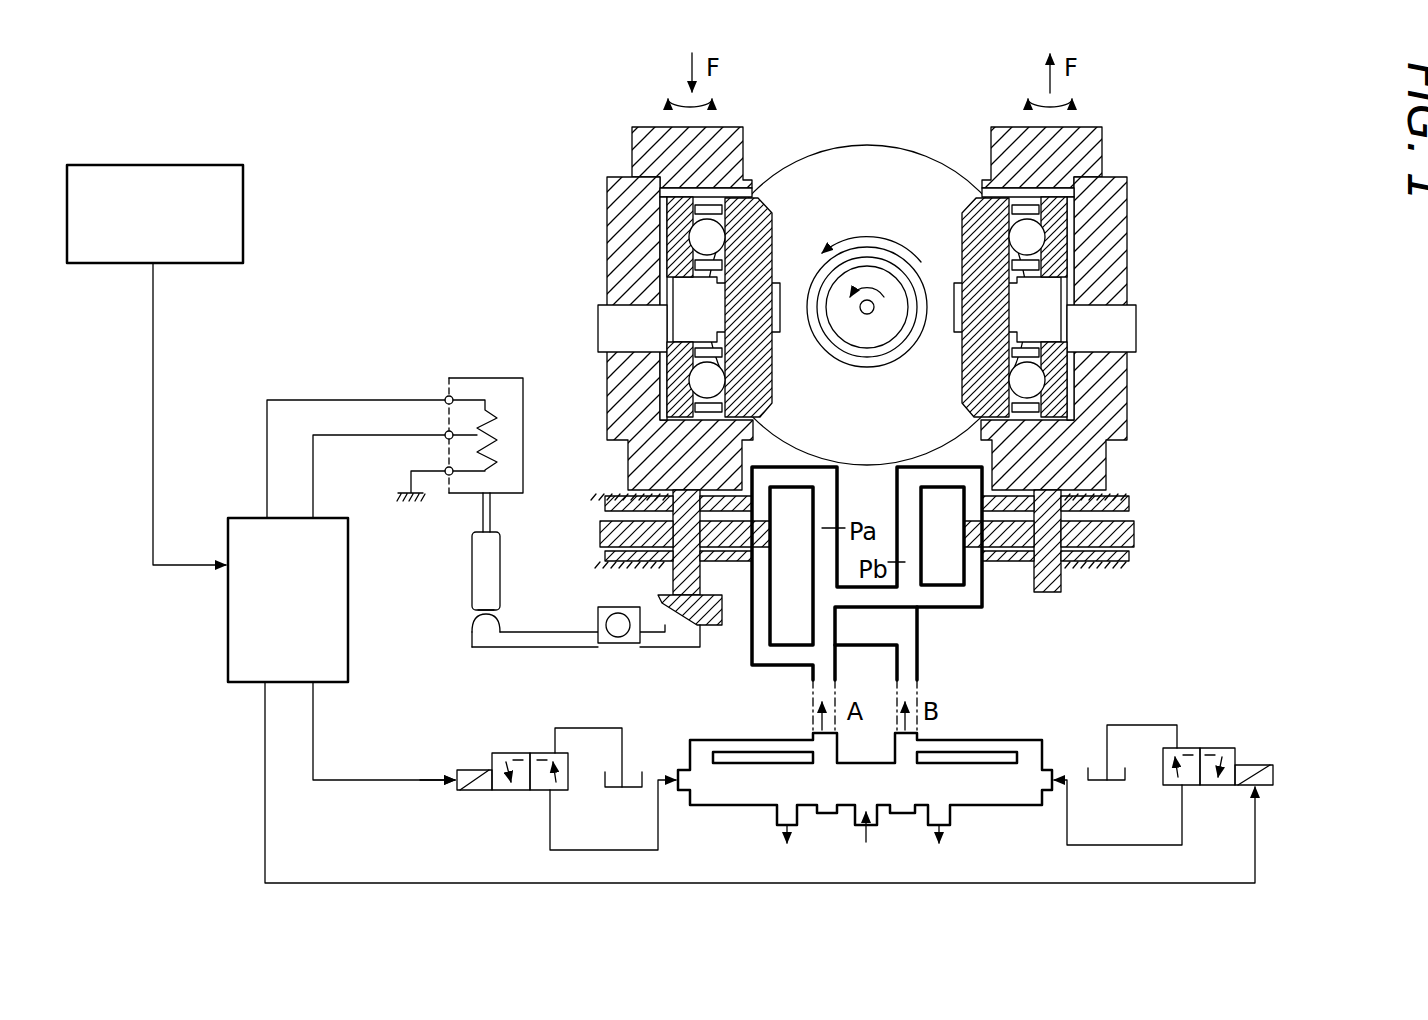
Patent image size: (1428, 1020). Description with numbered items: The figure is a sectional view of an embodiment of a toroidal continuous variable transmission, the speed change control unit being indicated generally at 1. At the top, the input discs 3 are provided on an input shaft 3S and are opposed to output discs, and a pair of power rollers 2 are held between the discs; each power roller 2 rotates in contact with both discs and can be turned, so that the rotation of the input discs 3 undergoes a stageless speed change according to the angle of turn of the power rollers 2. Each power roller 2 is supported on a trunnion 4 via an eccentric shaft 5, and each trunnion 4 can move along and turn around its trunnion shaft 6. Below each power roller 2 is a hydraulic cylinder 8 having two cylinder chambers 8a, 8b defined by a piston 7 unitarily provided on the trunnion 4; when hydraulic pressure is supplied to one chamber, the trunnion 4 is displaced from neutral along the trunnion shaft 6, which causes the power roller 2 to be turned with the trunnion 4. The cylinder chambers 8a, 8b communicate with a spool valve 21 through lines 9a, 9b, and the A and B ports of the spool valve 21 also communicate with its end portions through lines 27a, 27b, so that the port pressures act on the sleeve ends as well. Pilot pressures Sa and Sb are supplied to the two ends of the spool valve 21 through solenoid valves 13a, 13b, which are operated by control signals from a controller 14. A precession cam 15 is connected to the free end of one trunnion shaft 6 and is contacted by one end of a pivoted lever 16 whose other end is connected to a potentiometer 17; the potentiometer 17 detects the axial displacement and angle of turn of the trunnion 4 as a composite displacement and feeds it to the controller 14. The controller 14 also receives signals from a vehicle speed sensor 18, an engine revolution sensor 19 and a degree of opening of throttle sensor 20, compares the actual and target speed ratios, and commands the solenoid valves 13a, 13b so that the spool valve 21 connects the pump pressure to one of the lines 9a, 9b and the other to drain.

The spindle head unit 1 is at (1128, 140).
The power roller 2 is at (750, 233).
The input disc 3 is at (880, 178).
The input shaft 3S is at (858, 280).
The trunnion 4 is at (622, 212).
The eccentric shaft 5 is at (620, 320).
The trunnion shaft 6 is at (692, 585).
The piston 7 is at (612, 535).
The hydraulic cylinder 8 is at (590, 555).
The cylinder chamber 8a is at (632, 497).
The cylinder chamber 8b is at (645, 556).
The line 9a is at (820, 667).
The line 9b is at (917, 667).
The solenoid valve 13a is at (1258, 765).
The solenoid valve 13b is at (470, 770).
The controller 14 is at (228, 638).
The precession cam 15 is at (714, 628).
The lever 16 is at (553, 648).
The potentiometer 17 is at (485, 378).
The vehicle speed sensor 18 is at (155, 365).
The engine revolution sensor 19 is at (155, 365).
The degree of opening of throttle sensor 20 is at (155, 365).
The spool valve 21 is at (1054, 740).
The line 27a is at (748, 740).
The line 27b is at (1008, 740).